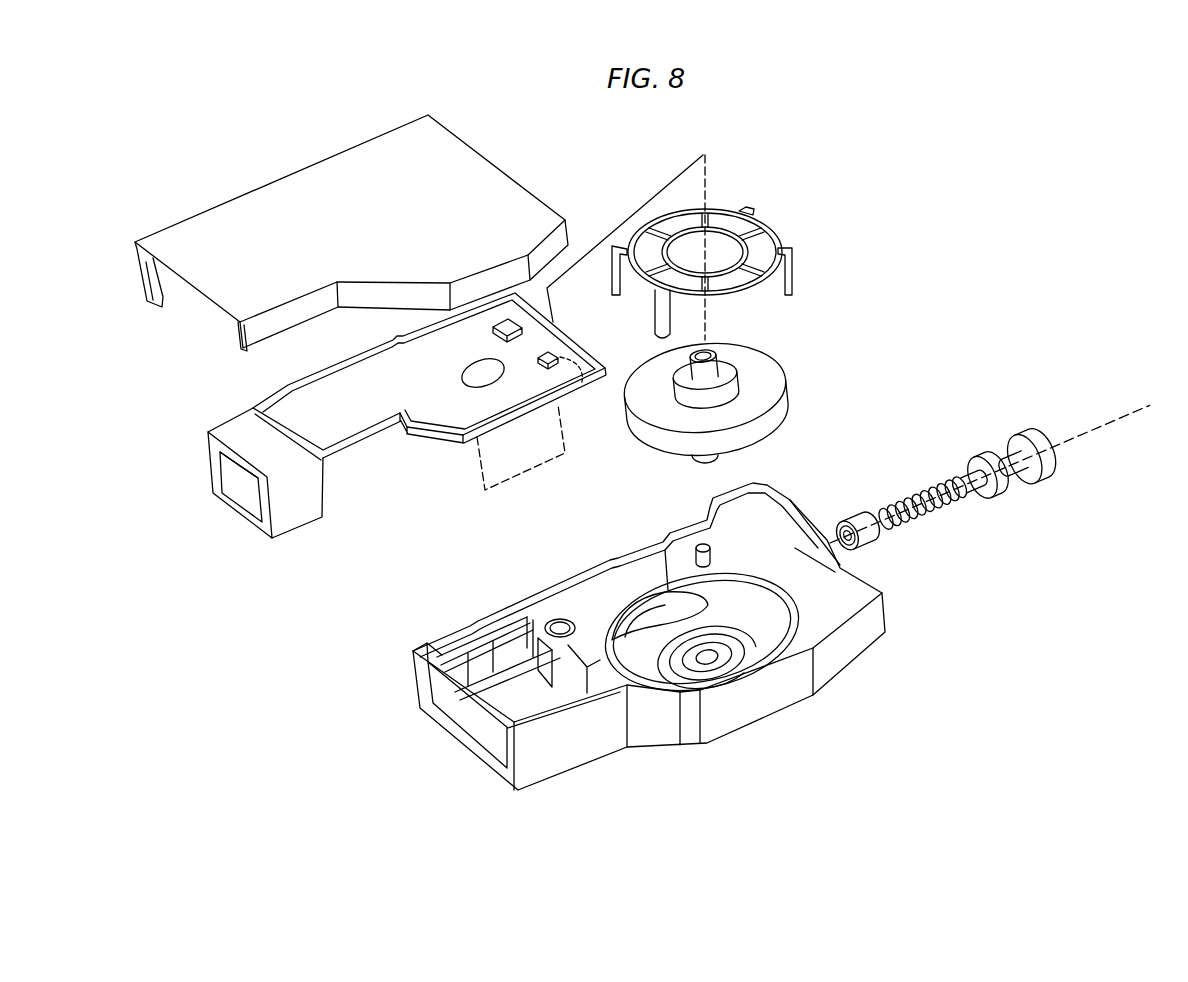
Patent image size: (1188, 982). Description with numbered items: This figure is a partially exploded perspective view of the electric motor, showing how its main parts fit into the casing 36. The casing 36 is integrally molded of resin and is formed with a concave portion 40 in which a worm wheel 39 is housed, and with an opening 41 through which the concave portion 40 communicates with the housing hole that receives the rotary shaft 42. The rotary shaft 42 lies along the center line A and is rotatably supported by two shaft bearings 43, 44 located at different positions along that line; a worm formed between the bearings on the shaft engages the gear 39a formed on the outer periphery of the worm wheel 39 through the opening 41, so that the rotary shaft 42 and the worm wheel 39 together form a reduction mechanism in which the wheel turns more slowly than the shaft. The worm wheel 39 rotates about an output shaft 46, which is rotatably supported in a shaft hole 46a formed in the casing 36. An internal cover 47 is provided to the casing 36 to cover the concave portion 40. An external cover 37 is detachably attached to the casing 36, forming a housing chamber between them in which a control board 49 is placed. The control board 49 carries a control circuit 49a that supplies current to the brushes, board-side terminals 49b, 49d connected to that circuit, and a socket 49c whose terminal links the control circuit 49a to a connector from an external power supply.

The casing 36 is at (649, 642).
The external cover 37 is at (526, 181).
The worm wheel 39 is at (749, 418).
The gear 39a is at (646, 428).
The concave portion 40 is at (757, 643).
The opening 41 is at (665, 602).
The rotary shaft 42 is at (921, 448).
The shaft bearing 43 is at (852, 513).
The shaft bearing 44 is at (1020, 435).
The output shaft 46 is at (713, 372).
The shaft hole 46a is at (685, 672).
The internal cover 47 is at (757, 238).
The control board 49 is at (419, 441).
The control circuit 49a is at (377, 408).
The board-side terminal 49b is at (577, 393).
The socket 49c is at (310, 510).
The board-side terminal 49d is at (522, 325).
The center line A is at (1113, 425).